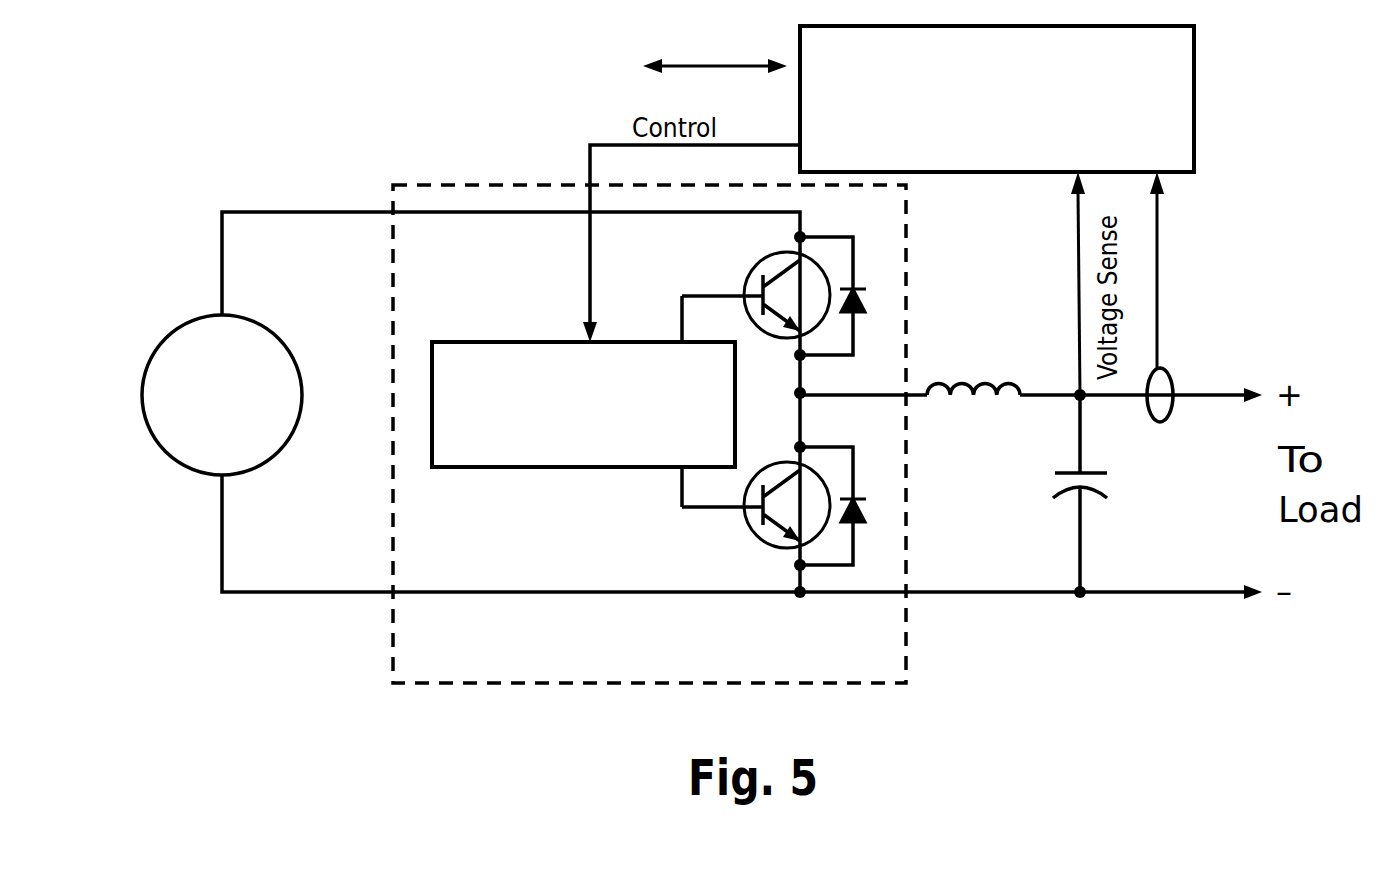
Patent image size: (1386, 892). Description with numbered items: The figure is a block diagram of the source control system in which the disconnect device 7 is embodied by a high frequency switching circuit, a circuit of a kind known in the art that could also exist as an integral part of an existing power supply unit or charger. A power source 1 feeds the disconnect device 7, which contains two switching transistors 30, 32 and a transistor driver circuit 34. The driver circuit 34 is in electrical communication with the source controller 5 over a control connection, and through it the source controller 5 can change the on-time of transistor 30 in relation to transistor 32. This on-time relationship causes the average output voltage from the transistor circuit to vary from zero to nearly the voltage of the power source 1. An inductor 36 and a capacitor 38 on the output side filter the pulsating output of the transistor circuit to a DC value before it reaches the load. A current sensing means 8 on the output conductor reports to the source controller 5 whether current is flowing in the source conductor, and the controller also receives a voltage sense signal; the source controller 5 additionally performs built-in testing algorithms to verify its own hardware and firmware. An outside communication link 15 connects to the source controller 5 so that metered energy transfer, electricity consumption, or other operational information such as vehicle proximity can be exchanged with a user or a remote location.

The power source 1 is at (195, 302).
The source controller 5 is at (1208, 92).
The disconnect device 7 is at (920, 475).
The current sensing means 8 is at (1180, 420).
The outside communication link 15 is at (682, 53).
The switching transistor 30 is at (747, 262).
The switching transistor 32 is at (735, 527).
The transistor driver circuit 34 is at (550, 330).
The inductor 36 is at (985, 353).
The capacitor 38 is at (1115, 487).